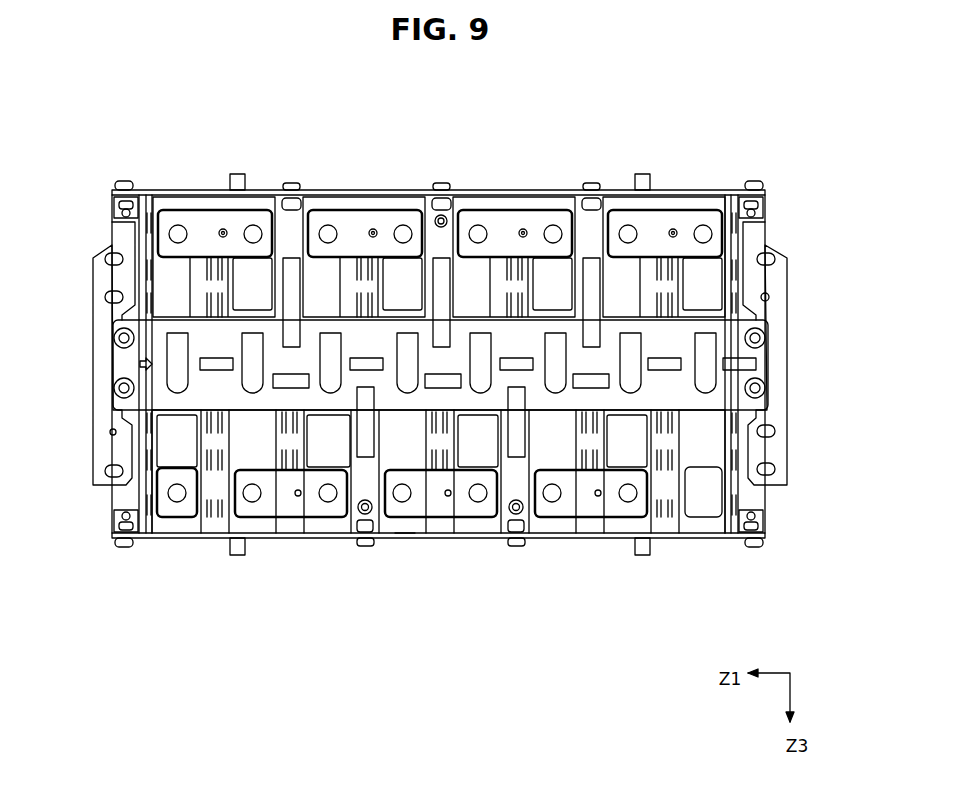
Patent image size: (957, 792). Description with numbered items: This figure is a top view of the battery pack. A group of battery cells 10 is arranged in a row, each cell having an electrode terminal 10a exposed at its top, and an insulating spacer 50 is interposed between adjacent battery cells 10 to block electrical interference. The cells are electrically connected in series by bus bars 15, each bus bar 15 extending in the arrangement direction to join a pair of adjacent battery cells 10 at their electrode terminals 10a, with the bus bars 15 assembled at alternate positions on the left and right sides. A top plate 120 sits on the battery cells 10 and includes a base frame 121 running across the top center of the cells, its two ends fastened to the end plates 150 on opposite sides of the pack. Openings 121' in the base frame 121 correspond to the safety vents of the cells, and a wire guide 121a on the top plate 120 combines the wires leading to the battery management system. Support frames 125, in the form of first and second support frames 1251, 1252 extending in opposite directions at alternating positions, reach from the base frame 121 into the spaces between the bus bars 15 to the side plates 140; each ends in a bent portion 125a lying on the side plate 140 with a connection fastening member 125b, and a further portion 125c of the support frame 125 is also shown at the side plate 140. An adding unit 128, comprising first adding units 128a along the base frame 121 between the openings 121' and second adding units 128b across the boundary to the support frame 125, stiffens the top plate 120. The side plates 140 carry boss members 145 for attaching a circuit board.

The battery cell 10 is at (712, 452).
The electrode terminal 10a is at (627, 507).
The bus bar 15 is at (515, 222).
The spacer 50 is at (667, 517).
The top plate 120 is at (755, 312).
The base frame 121 is at (407, 365).
The wire guide 121a is at (745, 363).
The opening 121' is at (694, 270).
The support frame 125 is at (583, 223).
The first support frame 1251 is at (432, 245).
The second support frame 1252 is at (357, 480).
The bent portion 125a is at (367, 543).
The connection fastening member 125b is at (522, 485).
The bottom fixing portion 125c is at (403, 530).
The adding unit 128 is at (282, 237).
The first adding unit 128a is at (283, 377).
The second adding unit 128b is at (292, 268).
The side plate 140 is at (172, 189).
The boss member 145 is at (645, 555).
The end plate 150 is at (773, 410).